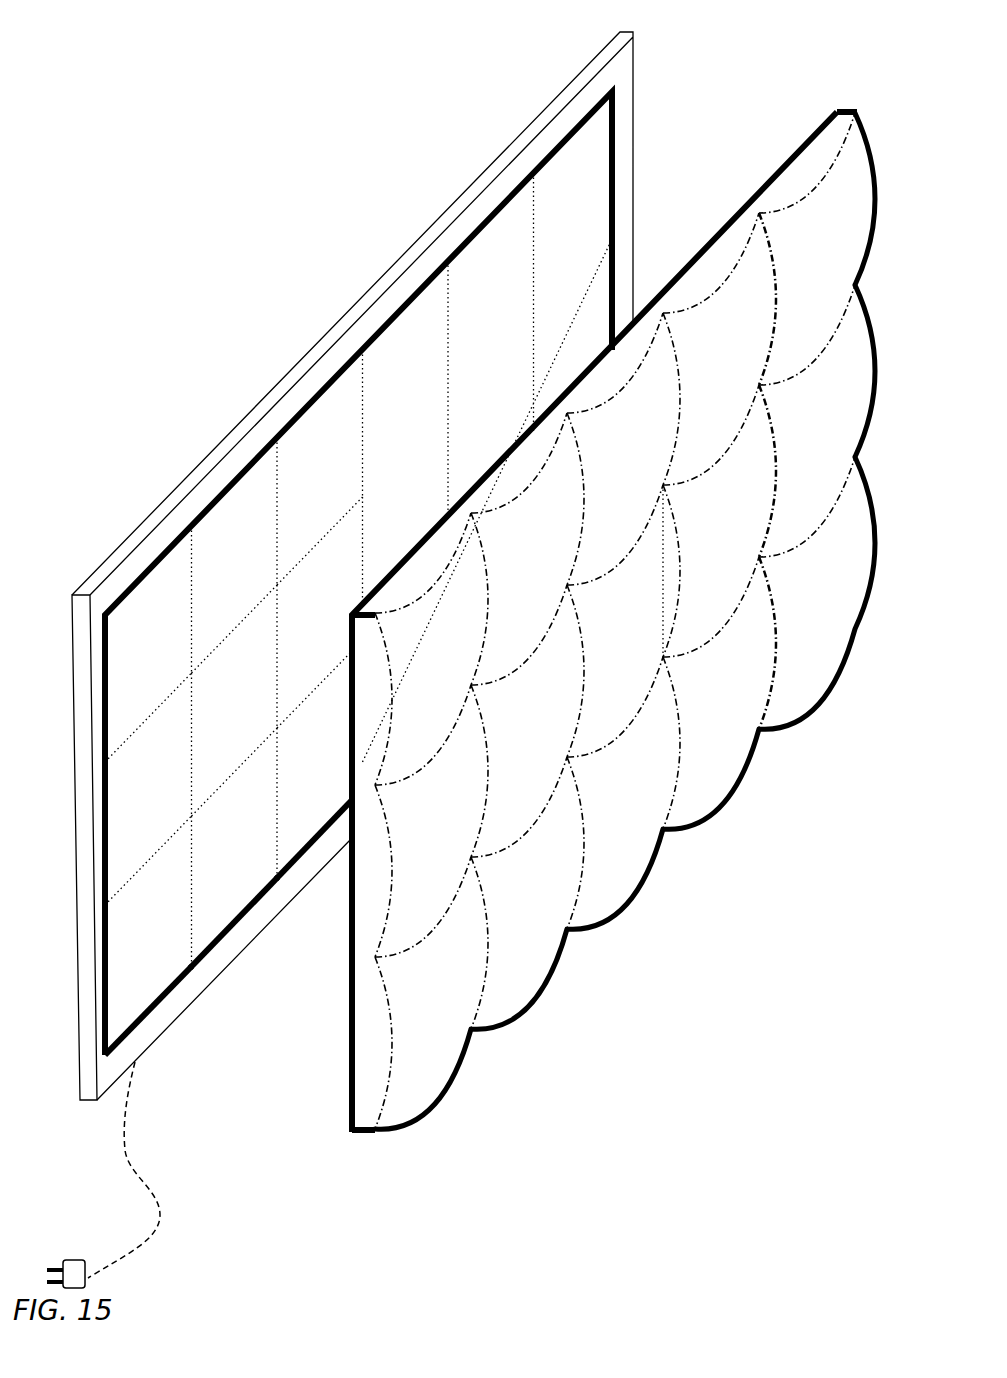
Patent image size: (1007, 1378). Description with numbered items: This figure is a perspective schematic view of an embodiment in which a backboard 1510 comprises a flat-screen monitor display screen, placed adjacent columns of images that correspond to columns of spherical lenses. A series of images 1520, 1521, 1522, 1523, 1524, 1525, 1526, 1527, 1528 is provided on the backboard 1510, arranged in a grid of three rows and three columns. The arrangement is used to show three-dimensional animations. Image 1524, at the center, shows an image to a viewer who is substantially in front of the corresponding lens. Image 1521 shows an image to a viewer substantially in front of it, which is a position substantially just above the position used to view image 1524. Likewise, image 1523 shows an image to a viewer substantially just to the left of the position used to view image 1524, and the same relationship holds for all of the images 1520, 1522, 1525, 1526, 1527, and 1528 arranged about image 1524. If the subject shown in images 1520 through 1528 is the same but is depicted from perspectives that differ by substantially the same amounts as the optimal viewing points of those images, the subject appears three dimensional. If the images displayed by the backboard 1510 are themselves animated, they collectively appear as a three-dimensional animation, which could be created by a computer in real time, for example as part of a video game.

The backboard 1510 is at (331, 589).
The image 1520 is at (148, 644).
The image 1521 is at (235, 555).
The image 1522 is at (320, 467).
The image 1523 is at (148, 789).
The image 1524 is at (235, 700).
The image 1525 is at (320, 612).
The image 1526 is at (148, 935).
The image 1527 is at (234, 848).
The image 1528 is at (314, 814).